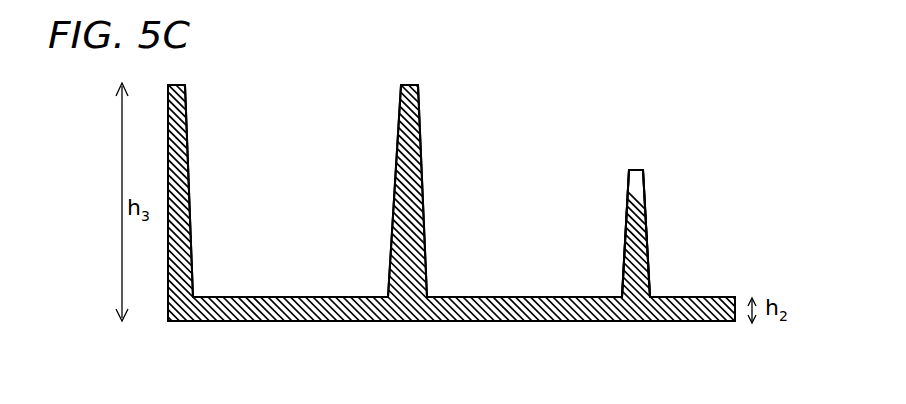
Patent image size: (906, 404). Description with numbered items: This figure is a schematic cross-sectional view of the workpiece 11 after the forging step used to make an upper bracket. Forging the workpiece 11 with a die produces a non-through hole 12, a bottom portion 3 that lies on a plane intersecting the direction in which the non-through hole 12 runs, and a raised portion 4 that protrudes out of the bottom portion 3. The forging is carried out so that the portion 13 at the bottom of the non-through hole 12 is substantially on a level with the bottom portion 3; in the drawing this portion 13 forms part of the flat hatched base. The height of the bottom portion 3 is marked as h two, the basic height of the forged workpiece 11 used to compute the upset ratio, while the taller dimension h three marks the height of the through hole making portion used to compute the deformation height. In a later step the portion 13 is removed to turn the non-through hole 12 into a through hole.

The bottom portion 3 is at (490, 322).
The raised portion 4 is at (646, 250).
The workpiece 11 is at (674, 126).
The non-through hole 12 is at (304, 116).
The portion at the bottom of the non-through hole 13 is at (285, 322).